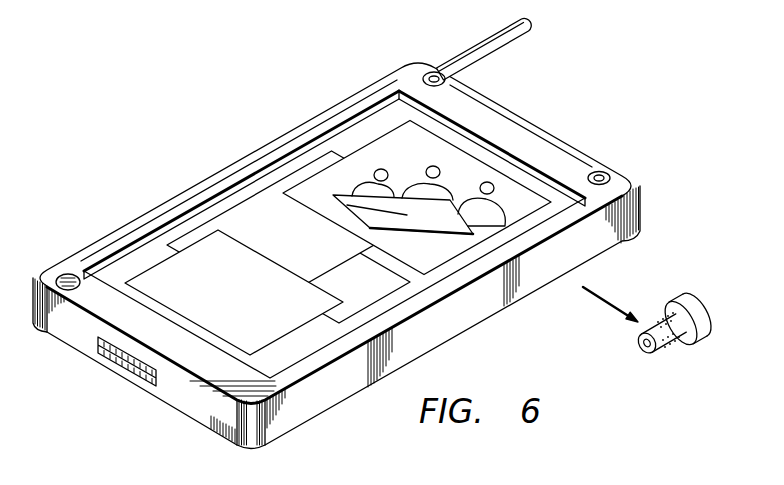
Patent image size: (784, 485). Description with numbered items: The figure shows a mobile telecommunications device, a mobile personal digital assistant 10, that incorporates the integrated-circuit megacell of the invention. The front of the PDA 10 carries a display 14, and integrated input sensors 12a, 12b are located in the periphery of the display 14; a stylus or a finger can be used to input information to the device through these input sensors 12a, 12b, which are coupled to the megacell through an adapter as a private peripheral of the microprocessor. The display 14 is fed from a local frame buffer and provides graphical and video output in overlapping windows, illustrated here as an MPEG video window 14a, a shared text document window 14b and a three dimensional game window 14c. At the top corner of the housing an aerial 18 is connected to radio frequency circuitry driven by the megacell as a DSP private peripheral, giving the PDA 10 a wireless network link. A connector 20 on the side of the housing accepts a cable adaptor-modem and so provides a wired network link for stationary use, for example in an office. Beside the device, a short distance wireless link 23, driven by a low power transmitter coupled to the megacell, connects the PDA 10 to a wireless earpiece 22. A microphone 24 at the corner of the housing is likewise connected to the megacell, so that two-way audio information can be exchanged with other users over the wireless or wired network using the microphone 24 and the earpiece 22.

The mobile personal digital assistant 10 is at (534, 337).
The integrated input sensor 12a is at (298, 143).
The integrated input sensor 12b is at (507, 137).
The display 14 is at (115, 272).
The MPEG video window 14a is at (377, 147).
The shared text document window 14b is at (260, 195).
The three dimensional game window 14c is at (170, 267).
The aerial 18 is at (487, 47).
The connector 20 is at (108, 355).
The earpiece 22 is at (701, 312).
The short distance wireless link 23 is at (626, 296).
The microphone 24 is at (58, 278).